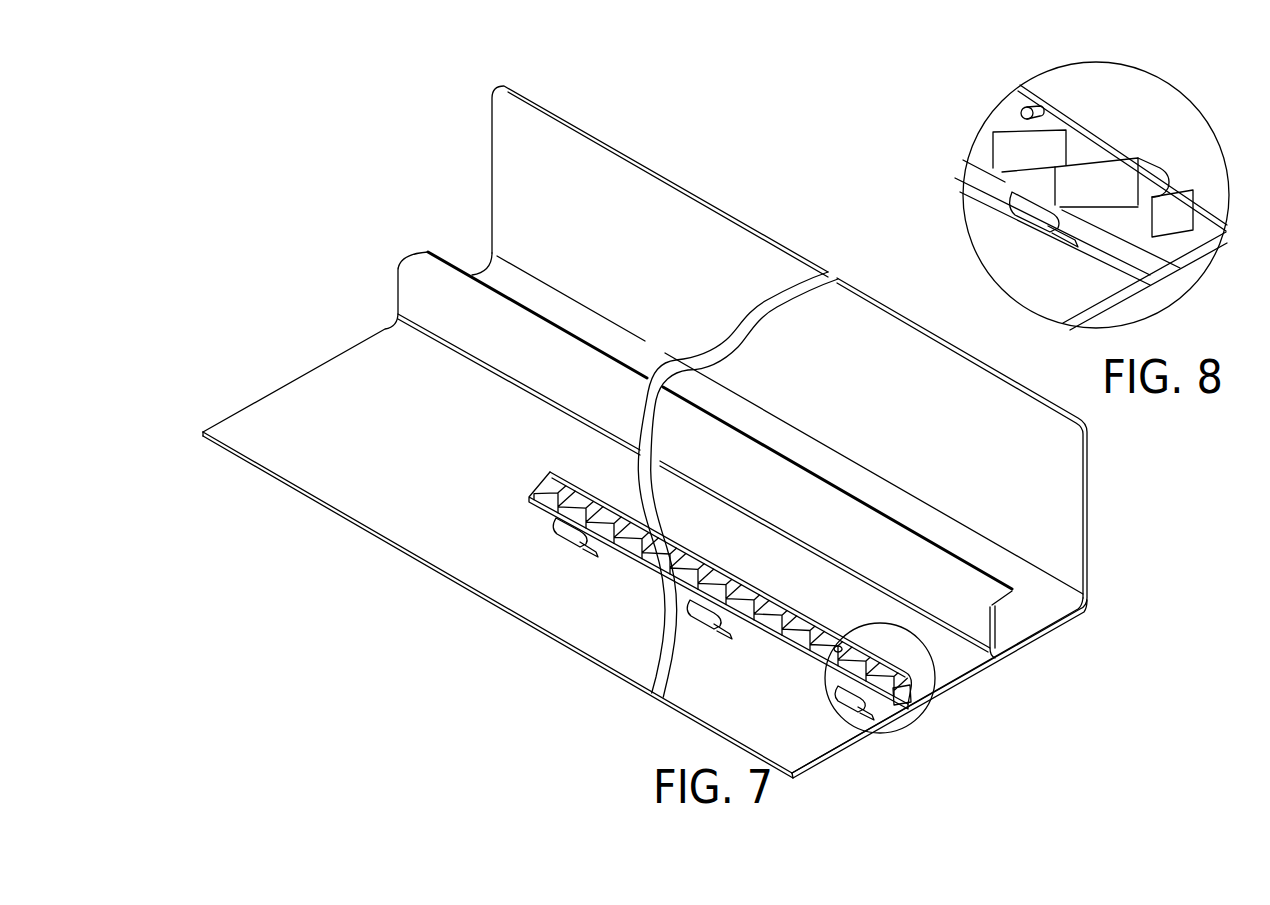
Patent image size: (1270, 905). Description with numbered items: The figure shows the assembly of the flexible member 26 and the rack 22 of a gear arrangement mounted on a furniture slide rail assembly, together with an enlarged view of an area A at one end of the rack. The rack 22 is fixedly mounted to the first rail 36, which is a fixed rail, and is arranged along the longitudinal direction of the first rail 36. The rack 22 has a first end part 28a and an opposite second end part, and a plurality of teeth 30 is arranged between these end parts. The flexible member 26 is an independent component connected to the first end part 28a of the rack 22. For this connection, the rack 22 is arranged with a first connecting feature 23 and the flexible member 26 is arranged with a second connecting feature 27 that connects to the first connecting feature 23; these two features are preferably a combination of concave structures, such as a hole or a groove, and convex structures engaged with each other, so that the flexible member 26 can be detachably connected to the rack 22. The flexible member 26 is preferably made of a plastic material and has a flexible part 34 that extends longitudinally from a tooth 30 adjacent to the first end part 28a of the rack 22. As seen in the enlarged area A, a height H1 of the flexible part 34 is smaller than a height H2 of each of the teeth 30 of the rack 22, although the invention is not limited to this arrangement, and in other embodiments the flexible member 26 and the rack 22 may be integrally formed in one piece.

In FIG. 7, the first rail 36 is at (360, 324).
In FIG. 7, the rack 22 is at (707, 487).
In FIG. 8, the rack 22 is at (1087, 180).
In FIG. 7, the flexible member 26 is at (886, 654).
In FIG. 8, the flexible member 26 is at (1097, 148).
In FIG. 7, the first connecting feature 23 is at (868, 700).
In FIG. 8, the first connecting feature 23 is at (1044, 219).
In FIG. 7, the flexible part 34 is at (911, 702).
In FIG. 8, the flexible part 34 is at (1177, 215).
In FIG. 7, the second connecting feature 27 is at (842, 648).
In FIG. 8, the second connecting feature 27 is at (1033, 112).
In FIG. 8, the teeth 30 is at (1010, 118).
In FIG. 8, the first end part 28a is at (1158, 160).
In FIG. 8, the height of the flexible part H1 is at (1160, 182).
In FIG. 8, the height of each of the teeth H2 is at (1066, 163).
In FIG. 7, the area A is at (851, 734).